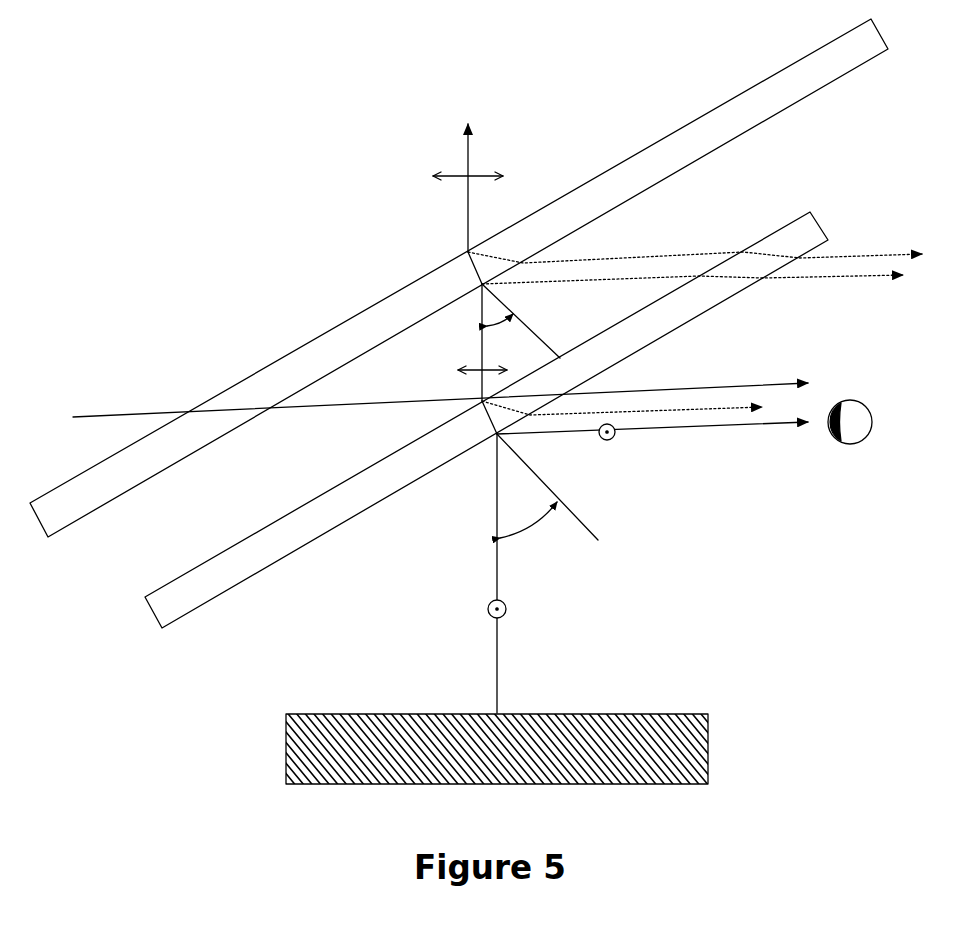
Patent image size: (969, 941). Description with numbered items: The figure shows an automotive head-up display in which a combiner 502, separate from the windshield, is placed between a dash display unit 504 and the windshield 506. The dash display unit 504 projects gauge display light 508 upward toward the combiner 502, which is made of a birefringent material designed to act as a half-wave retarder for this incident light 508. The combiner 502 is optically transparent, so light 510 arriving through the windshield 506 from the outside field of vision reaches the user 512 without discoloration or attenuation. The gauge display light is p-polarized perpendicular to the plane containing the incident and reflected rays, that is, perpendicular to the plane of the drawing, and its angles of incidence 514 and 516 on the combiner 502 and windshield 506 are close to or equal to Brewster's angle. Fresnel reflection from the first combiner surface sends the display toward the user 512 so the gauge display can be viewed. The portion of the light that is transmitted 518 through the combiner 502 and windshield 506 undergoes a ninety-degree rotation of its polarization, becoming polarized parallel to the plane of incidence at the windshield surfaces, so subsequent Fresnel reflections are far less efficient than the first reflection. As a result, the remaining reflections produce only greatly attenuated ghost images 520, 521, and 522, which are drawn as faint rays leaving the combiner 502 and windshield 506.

The combiner 502 is at (292, 533).
The dash display unit 504 is at (709, 743).
The windshield 506 is at (145, 455).
The light 508 is at (498, 650).
The light transmitted through the windshield 510 is at (142, 413).
The user 512 is at (848, 443).
The angle of incidence 514 is at (497, 523).
The angle of incidence 516 is at (483, 337).
The transmitted light 518 is at (468, 230).
The ghost image 520 is at (688, 410).
The ghost image 521 is at (873, 278).
The ghost image 522 is at (867, 255).